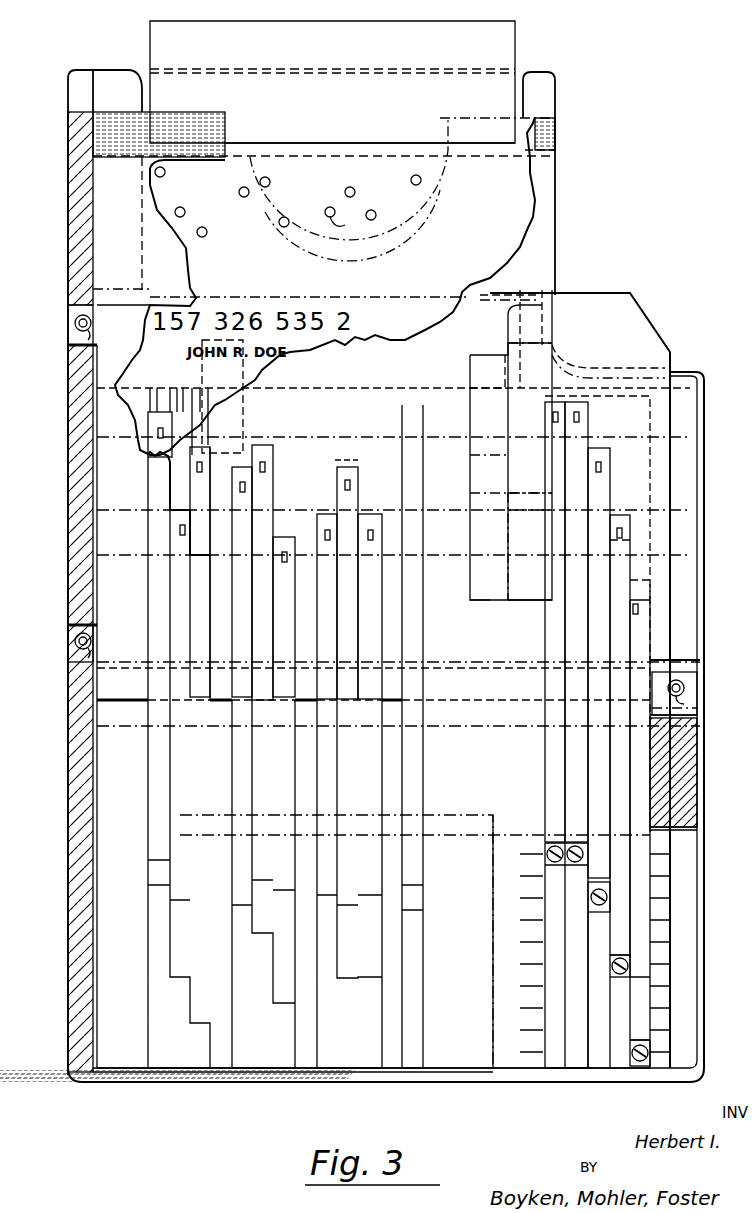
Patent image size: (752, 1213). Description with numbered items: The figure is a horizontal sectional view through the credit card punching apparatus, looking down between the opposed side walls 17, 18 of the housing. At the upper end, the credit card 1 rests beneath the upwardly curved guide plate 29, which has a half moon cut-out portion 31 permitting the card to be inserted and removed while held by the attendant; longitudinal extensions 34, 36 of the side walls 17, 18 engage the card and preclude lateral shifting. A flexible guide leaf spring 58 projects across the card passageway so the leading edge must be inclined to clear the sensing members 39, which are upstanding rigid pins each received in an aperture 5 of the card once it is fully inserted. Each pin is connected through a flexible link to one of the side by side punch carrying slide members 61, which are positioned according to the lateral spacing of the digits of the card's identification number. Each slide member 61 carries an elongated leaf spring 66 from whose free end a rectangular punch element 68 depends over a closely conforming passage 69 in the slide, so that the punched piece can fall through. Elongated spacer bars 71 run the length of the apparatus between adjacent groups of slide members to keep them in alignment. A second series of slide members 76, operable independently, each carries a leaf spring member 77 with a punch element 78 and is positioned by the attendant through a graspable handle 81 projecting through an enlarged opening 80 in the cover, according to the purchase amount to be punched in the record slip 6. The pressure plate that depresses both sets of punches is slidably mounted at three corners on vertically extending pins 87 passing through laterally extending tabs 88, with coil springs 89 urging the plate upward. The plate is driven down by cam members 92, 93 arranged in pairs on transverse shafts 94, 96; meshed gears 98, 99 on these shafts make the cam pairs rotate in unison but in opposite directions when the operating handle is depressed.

The credit card 1 is at (345, 140).
The aperture 5 is at (368, 215).
The record slip 6 is at (625, 295).
The side wall 17 is at (68, 766).
The side wall 18 is at (693, 776).
The guide plate 29 is at (130, 244).
The half moon cut-out portion 31 is at (410, 205).
The longitudinal extension 34 is at (68, 184).
The longitudinal extension 36 is at (548, 142).
The sensing member 39 is at (180, 210).
The guide leaf spring 58 is at (360, 54).
The slide member 61 is at (150, 418).
The leaf spring 66 is at (200, 590).
The punch element 68 is at (340, 480).
The passage 69 is at (152, 450).
The spacer bar 71 is at (228, 780).
The slide member 76 is at (614, 980).
The leaf spring member 77 is at (620, 586).
The punch element 78 is at (588, 418).
The opening 80 is at (605, 1066).
The handle 81 is at (608, 962).
The pin 87 is at (78, 320).
The tab 88 is at (70, 340).
The coil spring 89 is at (72, 338).
The cam member 92 is at (510, 340).
The cam member 93 is at (524, 605).
The shaft 94 is at (462, 455).
The shaft 96 is at (455, 510).
The gear 98 is at (488, 610).
The gear 99 is at (490, 345).